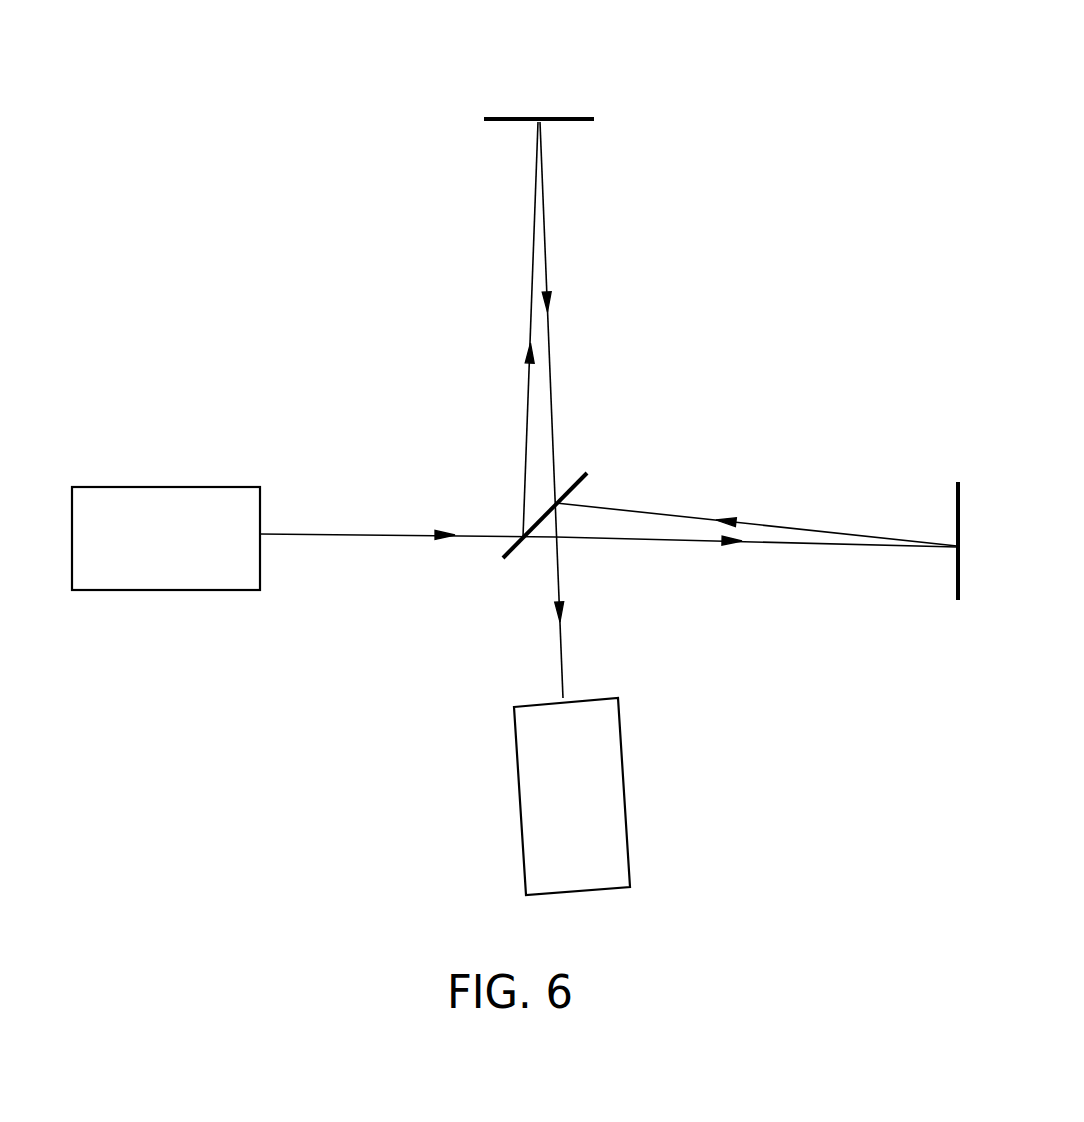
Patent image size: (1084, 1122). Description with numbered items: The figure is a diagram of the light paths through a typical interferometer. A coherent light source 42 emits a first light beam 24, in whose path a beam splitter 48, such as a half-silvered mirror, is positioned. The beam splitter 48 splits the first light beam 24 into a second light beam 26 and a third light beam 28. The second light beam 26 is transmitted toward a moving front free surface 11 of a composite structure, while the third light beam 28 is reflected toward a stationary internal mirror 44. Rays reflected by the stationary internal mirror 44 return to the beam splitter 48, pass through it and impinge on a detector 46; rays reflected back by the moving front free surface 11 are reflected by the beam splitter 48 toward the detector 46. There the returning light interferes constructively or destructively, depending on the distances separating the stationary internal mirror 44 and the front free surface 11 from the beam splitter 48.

The moving front free surface 11 is at (957, 520).
The first light beam 24 is at (393, 537).
The second light beam 26 is at (617, 540).
The third light beam 28 is at (523, 435).
The coherent light source 42 is at (133, 487).
The stationary internal mirror 44 is at (507, 117).
The detector 46 is at (522, 847).
The beam splitter 48 is at (573, 486).